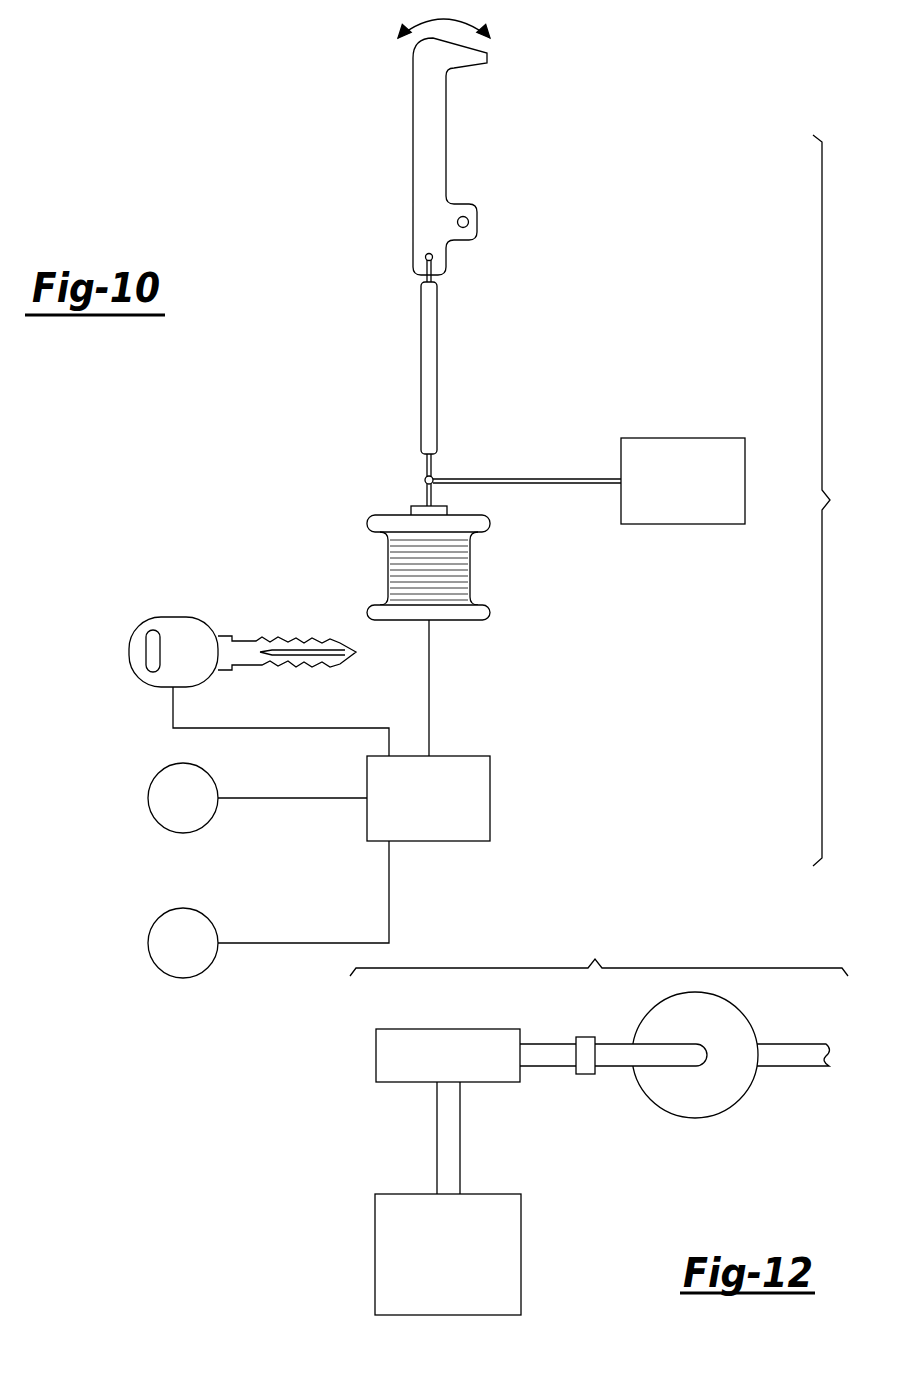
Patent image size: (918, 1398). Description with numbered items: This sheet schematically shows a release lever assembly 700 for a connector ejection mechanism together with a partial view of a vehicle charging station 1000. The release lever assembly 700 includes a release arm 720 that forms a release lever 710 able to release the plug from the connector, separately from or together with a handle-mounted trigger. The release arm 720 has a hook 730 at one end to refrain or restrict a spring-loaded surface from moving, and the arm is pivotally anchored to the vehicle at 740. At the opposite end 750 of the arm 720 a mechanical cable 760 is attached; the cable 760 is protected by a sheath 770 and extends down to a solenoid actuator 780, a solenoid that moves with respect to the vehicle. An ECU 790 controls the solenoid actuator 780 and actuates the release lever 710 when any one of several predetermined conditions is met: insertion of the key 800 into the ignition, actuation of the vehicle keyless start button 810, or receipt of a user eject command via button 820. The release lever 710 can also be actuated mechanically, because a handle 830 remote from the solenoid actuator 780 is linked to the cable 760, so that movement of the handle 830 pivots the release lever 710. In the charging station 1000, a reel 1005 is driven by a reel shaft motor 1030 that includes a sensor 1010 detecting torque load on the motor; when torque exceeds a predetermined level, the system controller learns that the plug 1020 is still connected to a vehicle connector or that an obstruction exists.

In FIG. 10, the release lever assembly 700 is at (842, 500).
In FIG. 10, the release lever 710 is at (433, 150).
In FIG. 10, the release arm 720 is at (415, 116).
In FIG. 10, the hook 730 is at (458, 58).
In FIG. 10, the pivot anchor 740 is at (469, 222).
In FIG. 10, the end of the arm 750 is at (424, 258).
In FIG. 10, the mechanical cable 760 is at (433, 467).
In FIG. 10, the sheath 770 is at (400, 343).
In FIG. 10, the solenoid actuator 780 is at (352, 514).
In FIG. 10, the ECU 790 is at (468, 756).
In FIG. 10, the key 800 is at (173, 617).
In FIG. 10, the vehicle keyless start button 810 is at (148, 798).
In FIG. 10, the eject button 820 is at (148, 943).
In FIG. 10, the handle 830 is at (683, 438).
In FIG. 12, the vehicle charging station 1000 is at (599, 953).
In FIG. 12, the reel 1005 is at (695, 1118).
In FIG. 12, the sensor 1010 is at (584, 1074).
In FIG. 12, the plug 1020 is at (461, 1268).
In FIG. 12, the reel shaft motor 1030 is at (461, 1067).